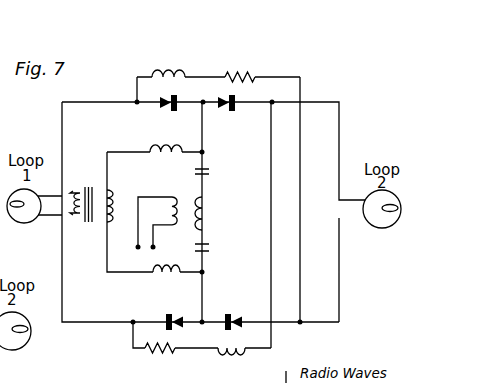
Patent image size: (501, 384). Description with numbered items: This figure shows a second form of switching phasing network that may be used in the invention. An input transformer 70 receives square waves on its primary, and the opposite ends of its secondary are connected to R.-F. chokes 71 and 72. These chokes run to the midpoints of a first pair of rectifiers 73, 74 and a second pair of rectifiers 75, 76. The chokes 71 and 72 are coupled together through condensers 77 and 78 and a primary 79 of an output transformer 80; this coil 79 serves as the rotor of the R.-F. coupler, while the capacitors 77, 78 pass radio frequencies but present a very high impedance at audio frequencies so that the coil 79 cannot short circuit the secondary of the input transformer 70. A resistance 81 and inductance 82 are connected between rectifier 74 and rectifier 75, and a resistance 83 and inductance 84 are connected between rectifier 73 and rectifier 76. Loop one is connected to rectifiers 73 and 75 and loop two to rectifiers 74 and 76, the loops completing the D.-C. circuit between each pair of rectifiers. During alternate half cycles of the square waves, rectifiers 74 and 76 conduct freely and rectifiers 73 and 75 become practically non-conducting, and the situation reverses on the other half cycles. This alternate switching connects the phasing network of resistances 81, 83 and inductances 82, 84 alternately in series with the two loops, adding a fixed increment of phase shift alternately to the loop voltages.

The input transformer 70 is at (93, 219).
The R.-F. choke 71 is at (163, 138).
The R.-F. choke 72 is at (171, 281).
The rectifier 73 is at (169, 95).
The rectifier 74 is at (236, 93).
The rectifier 75 is at (167, 330).
The rectifier 76 is at (229, 333).
The condenser 77 is at (203, 249).
The condenser 78 is at (206, 172).
The primary of output transformer 79 is at (209, 209).
The output transformer 80 is at (162, 210).
The resistance 81 is at (159, 359).
The inductance 82 is at (233, 357).
The resistance 83 is at (243, 64).
The inductance 84 is at (153, 68).